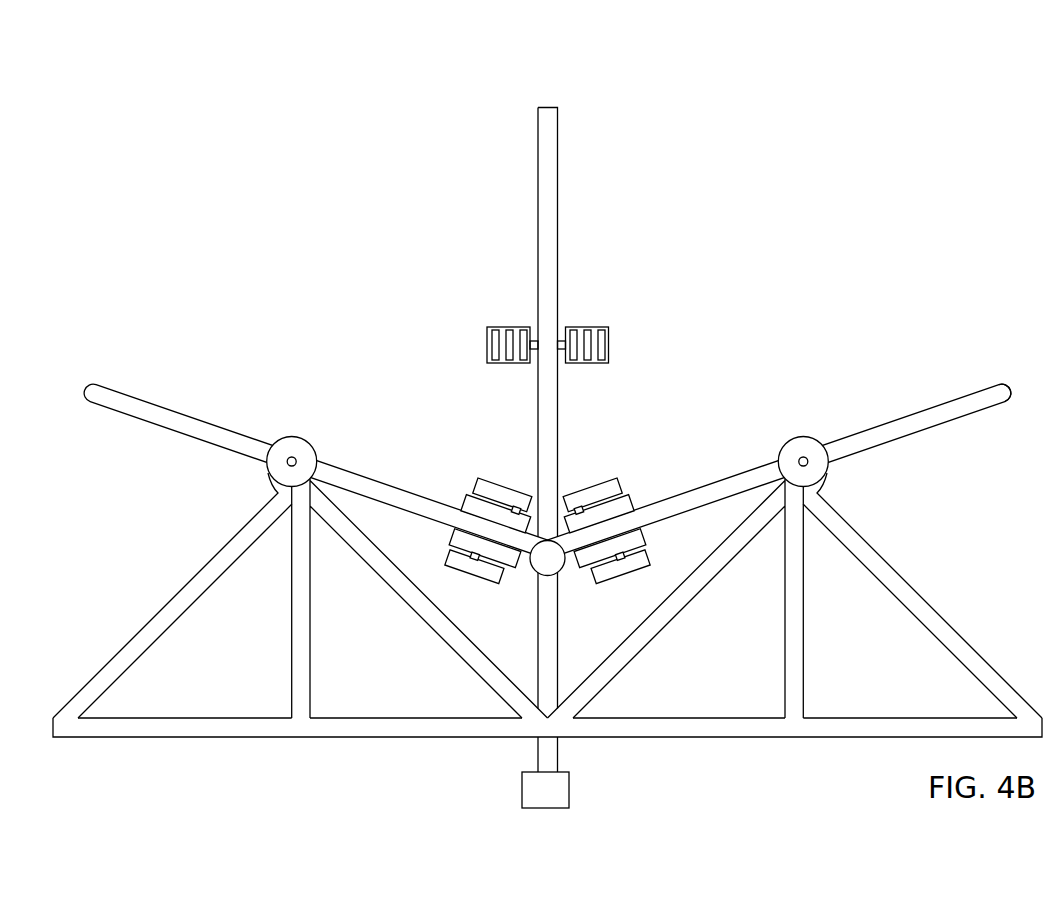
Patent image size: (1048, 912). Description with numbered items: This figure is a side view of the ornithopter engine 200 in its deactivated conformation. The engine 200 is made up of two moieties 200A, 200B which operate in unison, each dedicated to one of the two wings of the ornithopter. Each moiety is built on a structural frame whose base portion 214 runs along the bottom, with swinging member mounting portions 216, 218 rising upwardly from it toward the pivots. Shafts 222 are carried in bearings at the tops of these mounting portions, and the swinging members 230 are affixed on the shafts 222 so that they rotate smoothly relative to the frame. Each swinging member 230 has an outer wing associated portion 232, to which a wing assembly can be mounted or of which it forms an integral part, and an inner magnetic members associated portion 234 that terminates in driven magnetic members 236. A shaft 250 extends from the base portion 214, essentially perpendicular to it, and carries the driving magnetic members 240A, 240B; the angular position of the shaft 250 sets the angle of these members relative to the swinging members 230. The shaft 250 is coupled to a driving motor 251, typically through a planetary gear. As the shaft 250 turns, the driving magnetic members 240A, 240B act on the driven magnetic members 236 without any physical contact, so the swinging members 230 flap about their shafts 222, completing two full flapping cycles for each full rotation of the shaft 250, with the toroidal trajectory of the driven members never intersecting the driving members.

The ornithopter engine 200 is at (847, 122).
The moiety 200A is at (870, 302).
The moiety 200B is at (262, 227).
The base portion 214 is at (698, 722).
The swinging member mounting portion 216 is at (303, 580).
The swinging member mounting portion 218 is at (441, 623).
The shaft 222 is at (289, 462).
The swinging member 230 is at (150, 347).
The wing associated portion 232 is at (995, 394).
The magnetic members associated portion 234 is at (335, 479).
The driven magnetic member 236 is at (95, 394).
The driving magnetic member 240A is at (488, 326).
The driving magnetic member 240B is at (541, 563).
The shaft 250 is at (549, 117).
The driving motor 251 is at (527, 778).